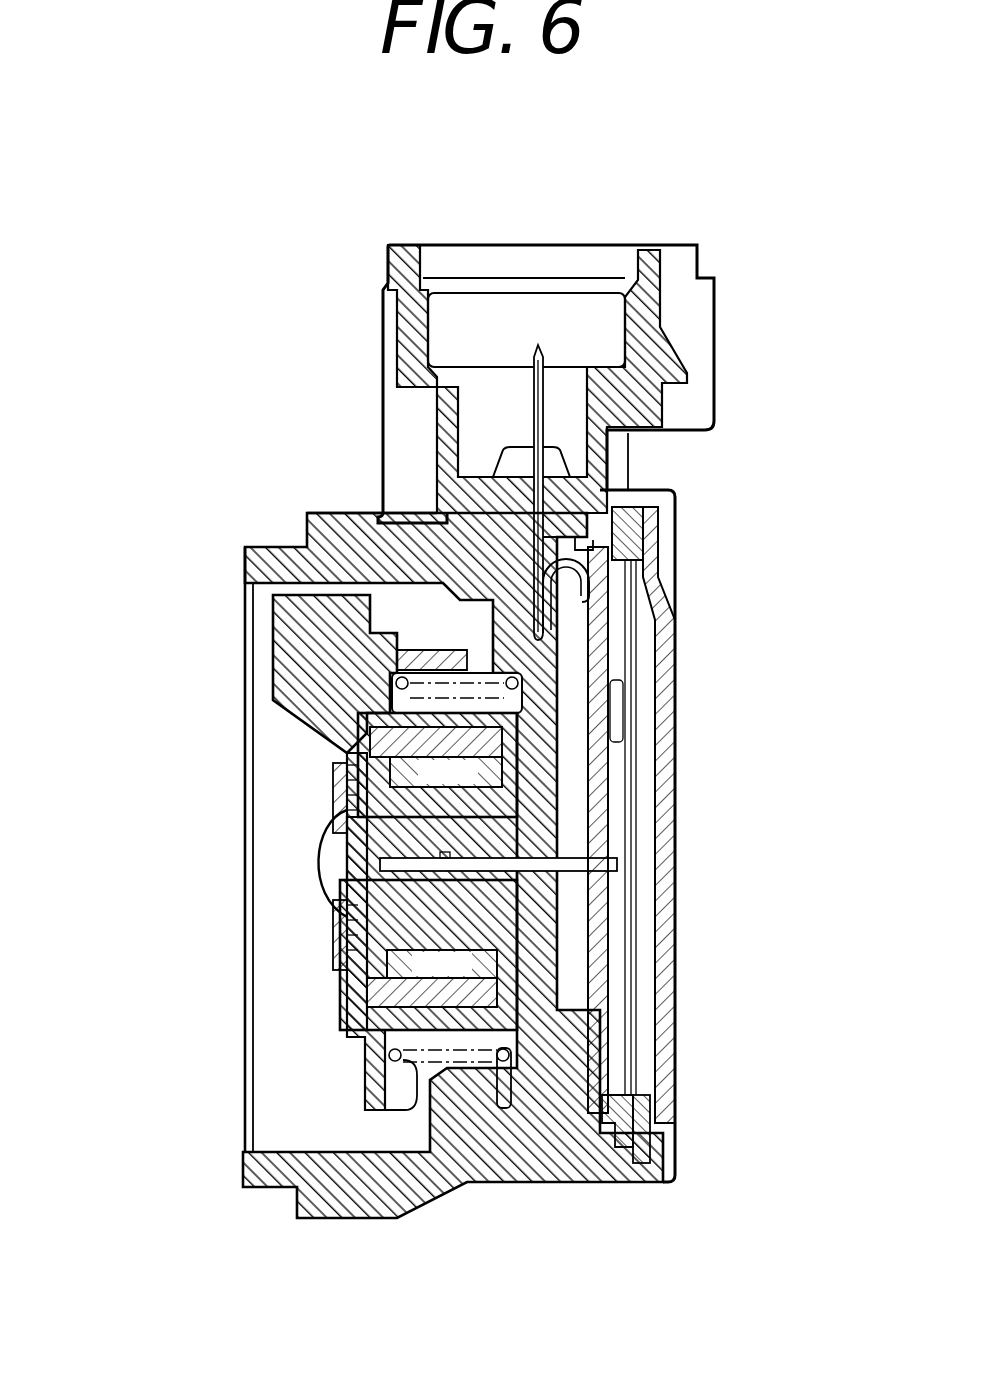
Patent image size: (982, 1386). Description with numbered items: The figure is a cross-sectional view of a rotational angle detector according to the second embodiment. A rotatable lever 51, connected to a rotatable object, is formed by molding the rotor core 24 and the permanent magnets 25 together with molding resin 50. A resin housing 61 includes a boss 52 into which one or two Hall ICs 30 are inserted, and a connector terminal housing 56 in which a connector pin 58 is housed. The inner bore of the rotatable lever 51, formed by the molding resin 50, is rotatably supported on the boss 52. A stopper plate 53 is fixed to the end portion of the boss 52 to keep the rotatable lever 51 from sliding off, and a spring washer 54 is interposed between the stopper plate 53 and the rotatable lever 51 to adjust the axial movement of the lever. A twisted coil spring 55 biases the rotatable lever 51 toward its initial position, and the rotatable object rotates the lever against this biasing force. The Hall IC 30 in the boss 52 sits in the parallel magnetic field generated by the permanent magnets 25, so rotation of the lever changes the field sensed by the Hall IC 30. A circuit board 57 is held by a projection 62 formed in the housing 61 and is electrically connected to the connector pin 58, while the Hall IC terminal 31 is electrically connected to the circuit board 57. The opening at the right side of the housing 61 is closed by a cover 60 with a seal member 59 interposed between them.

The rotor core 24 is at (473, 708).
The permanent magnets 25 is at (500, 773).
The Hall IC 30 is at (323, 890).
The Hall IC terminal 31 is at (587, 857).
The molding resin 50 is at (342, 708).
The rotatable lever 51 is at (258, 672).
The boss 52 is at (340, 863).
The stopper plate 53 is at (337, 795).
The spring washer 54 is at (345, 738).
The twisted coil spring 55 is at (410, 1058).
The connector terminal housing 56 is at (662, 348).
The circuit board 57 is at (598, 920).
The connector pin 58 is at (527, 407).
The seal member 59 is at (632, 517).
The cover 60 is at (676, 668).
The resin housing 61 is at (538, 1183).
The projection 62 is at (618, 1042).